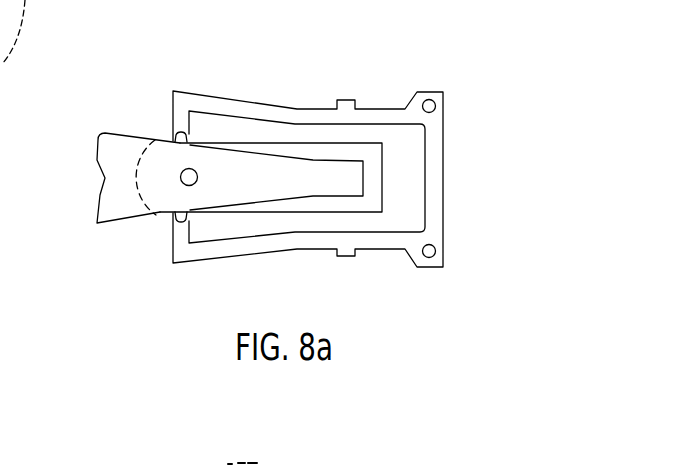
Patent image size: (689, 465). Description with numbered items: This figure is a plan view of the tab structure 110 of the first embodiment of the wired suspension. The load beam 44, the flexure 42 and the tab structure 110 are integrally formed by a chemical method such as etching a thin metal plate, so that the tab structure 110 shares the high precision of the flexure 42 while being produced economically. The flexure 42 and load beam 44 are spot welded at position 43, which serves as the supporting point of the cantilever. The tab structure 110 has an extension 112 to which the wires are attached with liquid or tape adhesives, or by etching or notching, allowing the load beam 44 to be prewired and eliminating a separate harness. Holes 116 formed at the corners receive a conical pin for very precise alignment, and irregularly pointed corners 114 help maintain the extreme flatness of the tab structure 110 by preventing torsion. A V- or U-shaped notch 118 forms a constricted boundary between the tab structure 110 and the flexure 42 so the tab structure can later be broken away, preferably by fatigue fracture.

The tab structure 110 is at (373, 77).
The extension 112 is at (443, 172).
The irregularly pointed corners 114 is at (233, 100).
The holes 116 is at (430, 99).
The notch 118 is at (172, 137).
The load beam 44 is at (118, 221).
The position 43 is at (181, 181).
The flexure 42 is at (298, 213).